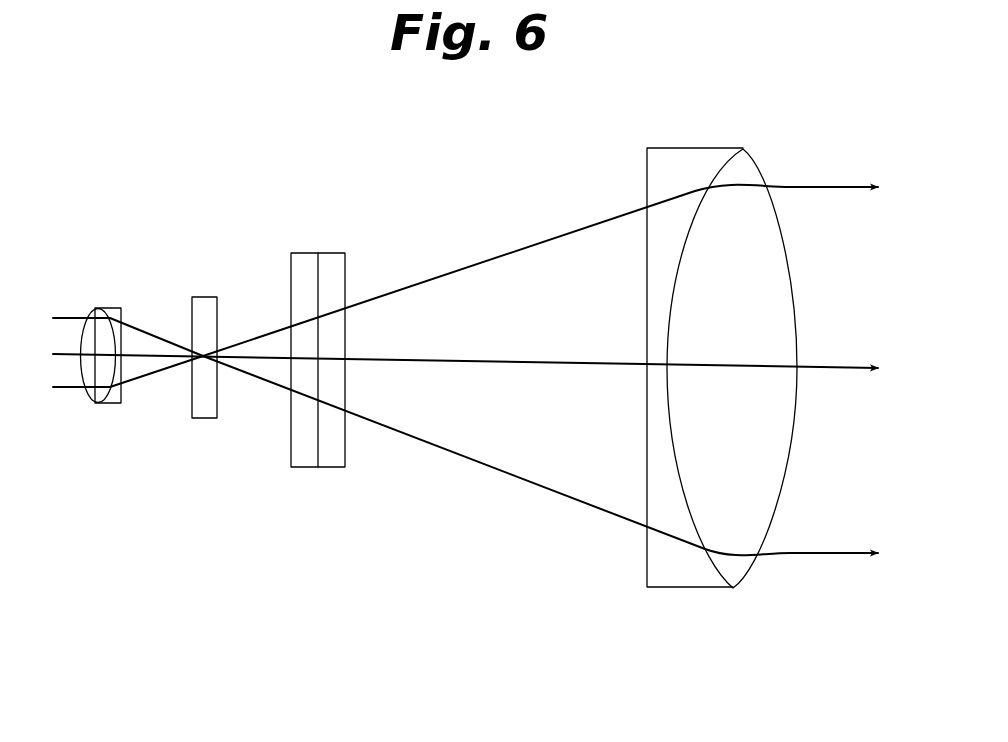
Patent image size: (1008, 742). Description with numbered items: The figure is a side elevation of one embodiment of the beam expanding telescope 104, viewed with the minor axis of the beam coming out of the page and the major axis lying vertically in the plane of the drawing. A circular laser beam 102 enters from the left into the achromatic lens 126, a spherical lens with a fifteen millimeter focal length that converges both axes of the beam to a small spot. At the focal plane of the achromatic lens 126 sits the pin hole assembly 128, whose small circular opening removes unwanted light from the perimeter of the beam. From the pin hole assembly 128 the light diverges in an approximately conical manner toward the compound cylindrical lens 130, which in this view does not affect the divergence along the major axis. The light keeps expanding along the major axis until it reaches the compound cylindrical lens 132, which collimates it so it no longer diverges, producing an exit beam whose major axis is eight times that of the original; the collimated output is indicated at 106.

The circular laser beam 102 is at (70, 310).
The beam expanding telescope 104 is at (270, 242).
The output collimated beam 106 is at (796, 175).
The achromatic lens 126 is at (112, 405).
The pin hole assembly 128 is at (190, 423).
The compound cylindrical lens 130 is at (303, 475).
The compound cylindrical lens 132 is at (690, 592).